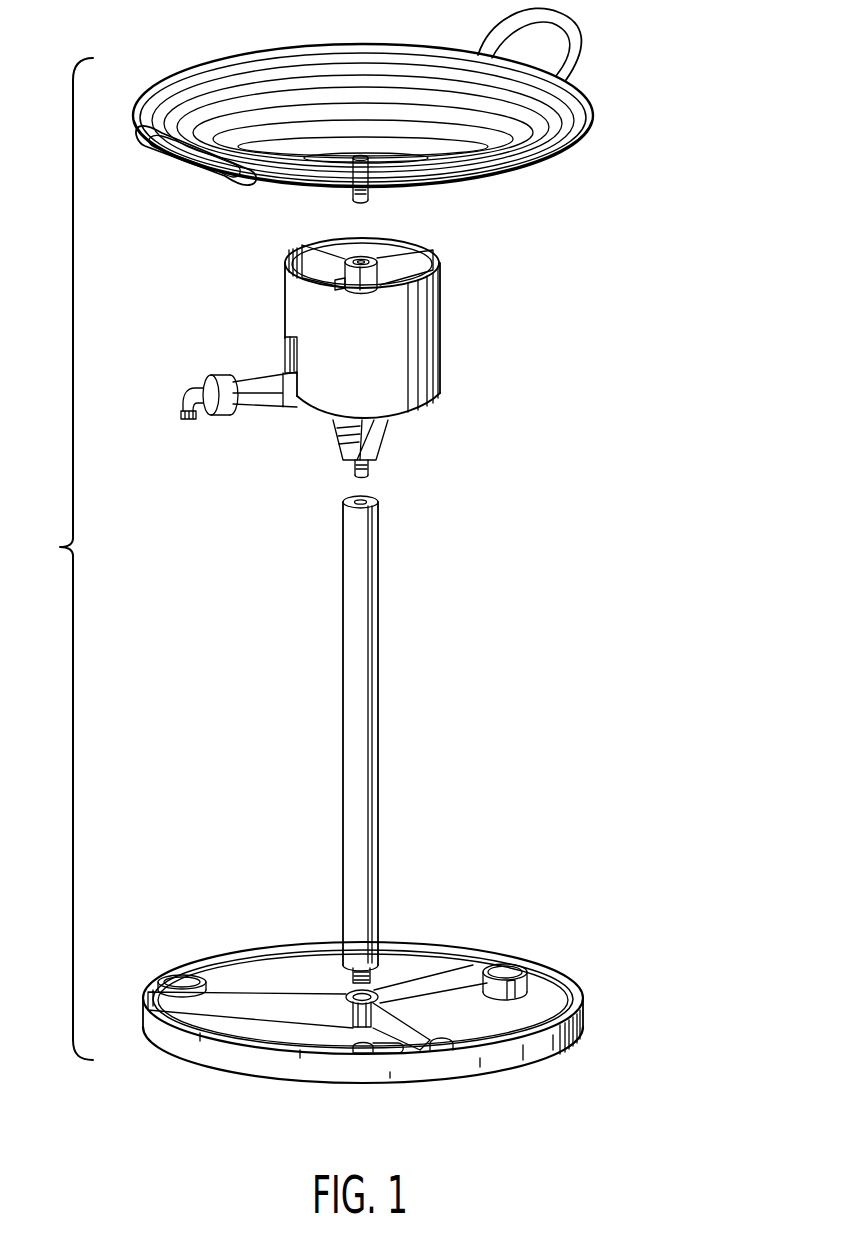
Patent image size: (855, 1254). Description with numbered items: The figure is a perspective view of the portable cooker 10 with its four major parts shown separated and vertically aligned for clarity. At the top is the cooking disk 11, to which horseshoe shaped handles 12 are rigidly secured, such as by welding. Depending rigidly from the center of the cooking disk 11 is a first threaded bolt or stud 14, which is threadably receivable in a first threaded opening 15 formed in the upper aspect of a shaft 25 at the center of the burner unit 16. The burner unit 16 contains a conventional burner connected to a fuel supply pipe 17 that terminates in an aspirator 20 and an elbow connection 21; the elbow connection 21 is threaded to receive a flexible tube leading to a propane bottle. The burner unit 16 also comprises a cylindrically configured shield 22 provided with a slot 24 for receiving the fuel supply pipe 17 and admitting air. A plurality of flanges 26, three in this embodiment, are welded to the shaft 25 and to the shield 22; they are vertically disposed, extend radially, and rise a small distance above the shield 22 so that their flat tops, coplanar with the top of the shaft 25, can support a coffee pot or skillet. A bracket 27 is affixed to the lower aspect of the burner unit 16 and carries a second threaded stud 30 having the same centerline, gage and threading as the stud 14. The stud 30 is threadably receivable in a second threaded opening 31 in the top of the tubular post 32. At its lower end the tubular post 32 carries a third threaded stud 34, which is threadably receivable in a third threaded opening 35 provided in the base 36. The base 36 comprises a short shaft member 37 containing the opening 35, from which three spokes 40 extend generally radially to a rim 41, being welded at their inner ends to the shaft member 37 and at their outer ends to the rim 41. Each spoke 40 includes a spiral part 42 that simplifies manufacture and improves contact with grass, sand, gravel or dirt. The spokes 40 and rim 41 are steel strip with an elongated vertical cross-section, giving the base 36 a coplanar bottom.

The portable cooker 10 is at (57, 559).
The cooking disk 11 is at (593, 104).
The horseshoe shaped handle 12 is at (580, 38).
The first threaded bolt or stud 14 is at (351, 200).
The first threaded opening 15 is at (363, 262).
The burner unit 16 is at (403, 328).
The fuel supply pipe 17 is at (277, 398).
The aspirator 20 is at (226, 416).
The elbow connection 21 is at (205, 390).
The cylindrically configured shield 22 is at (442, 328).
The slot 24 is at (285, 352).
The shaft 25 is at (393, 244).
The flange 26 is at (347, 278).
The bracket 27 is at (383, 433).
The second threaded bolt or stud 30 is at (370, 468).
The second threaded opening 31 is at (345, 495).
The tubular post 32 is at (370, 722).
The third threaded stud or bolt 34 is at (347, 970).
The third threaded opening 35 is at (380, 993).
The base 36 is at (473, 950).
The shaft member 37 is at (357, 1047).
The spoke 40 is at (263, 987).
The rim 41 is at (553, 1050).
The spiral part 42 is at (207, 972).